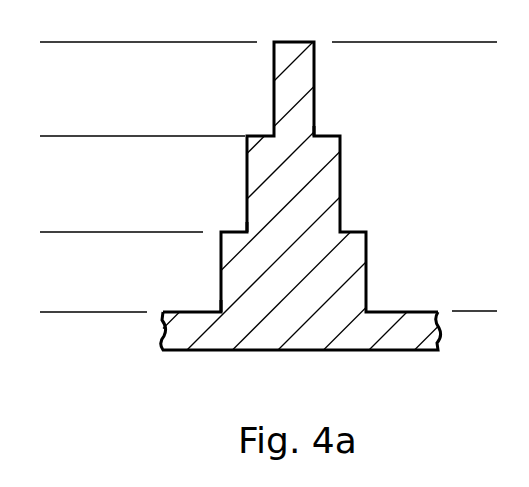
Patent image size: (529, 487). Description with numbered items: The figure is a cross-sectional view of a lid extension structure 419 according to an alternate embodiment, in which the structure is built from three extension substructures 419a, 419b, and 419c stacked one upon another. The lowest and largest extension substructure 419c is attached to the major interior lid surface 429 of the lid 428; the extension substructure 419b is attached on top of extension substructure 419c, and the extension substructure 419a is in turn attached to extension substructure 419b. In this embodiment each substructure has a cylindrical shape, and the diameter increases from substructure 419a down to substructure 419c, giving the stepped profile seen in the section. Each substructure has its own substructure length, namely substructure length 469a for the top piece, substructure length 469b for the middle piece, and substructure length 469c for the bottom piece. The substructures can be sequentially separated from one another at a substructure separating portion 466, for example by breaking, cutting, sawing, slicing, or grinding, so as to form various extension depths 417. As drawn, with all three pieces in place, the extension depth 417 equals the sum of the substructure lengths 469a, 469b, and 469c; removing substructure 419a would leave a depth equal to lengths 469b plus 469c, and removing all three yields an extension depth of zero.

The lid extension structure 419 is at (146, 248).
The extension substructure 419a is at (284, 73).
The extension substructure 419b is at (330, 180).
The extension substructure 419c is at (355, 253).
The lid 428 is at (360, 337).
The major interior lid surface 429 is at (206, 311).
The substructure separating portion 466 is at (237, 228).
The substructure length 469a is at (58, 42).
The substructure length 469b is at (58, 136).
The substructure length 469c is at (58, 232).
The extension depth 417 is at (482, 42).